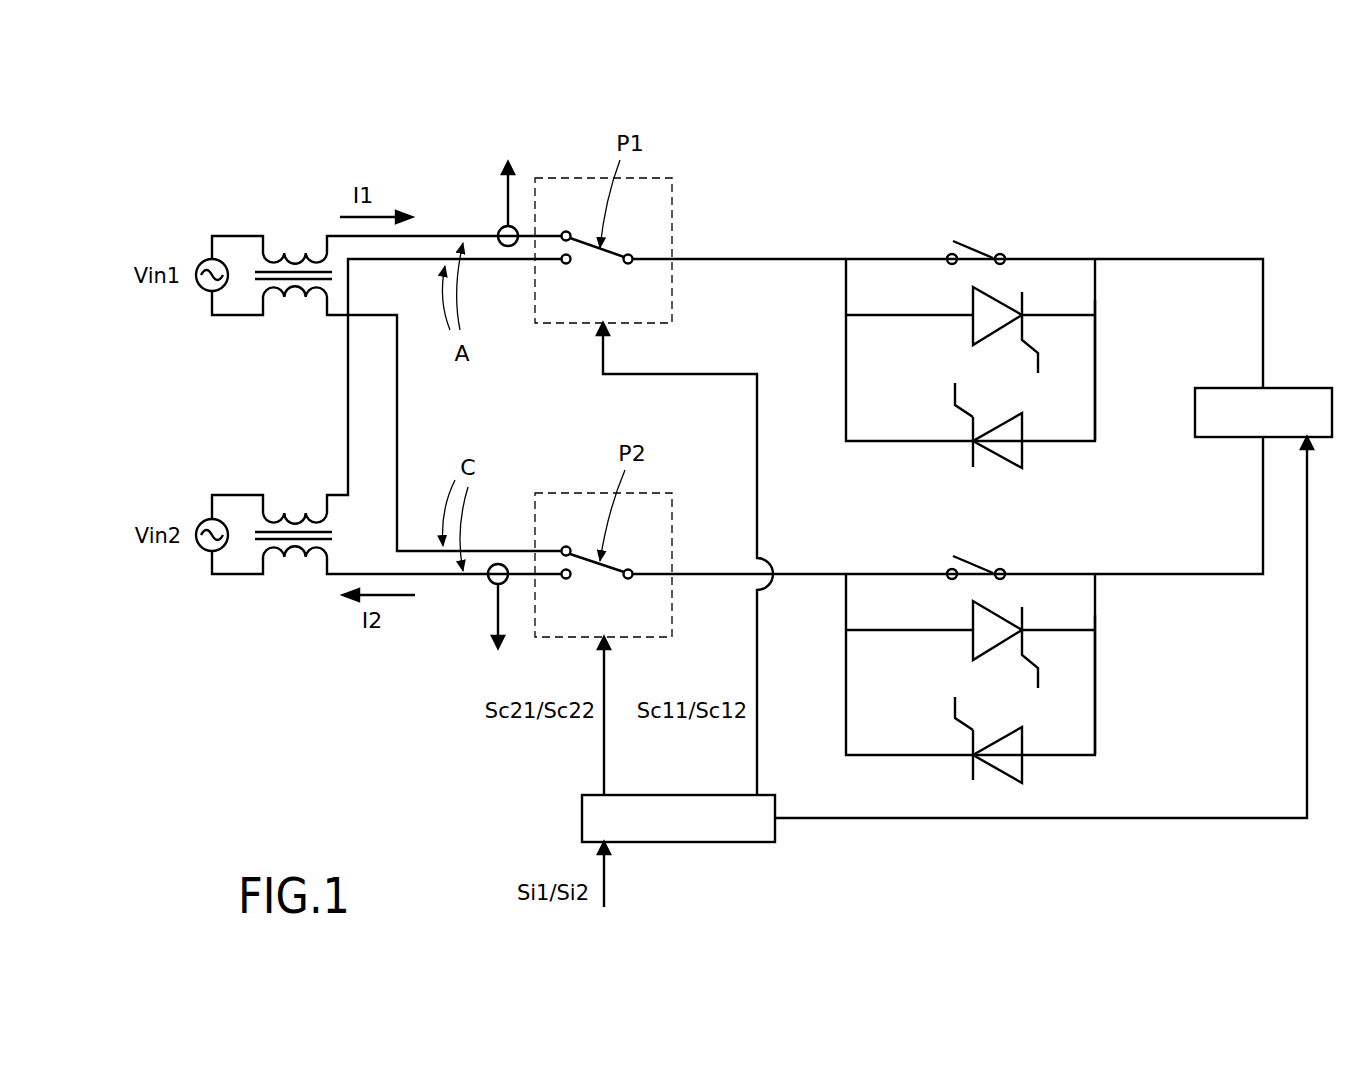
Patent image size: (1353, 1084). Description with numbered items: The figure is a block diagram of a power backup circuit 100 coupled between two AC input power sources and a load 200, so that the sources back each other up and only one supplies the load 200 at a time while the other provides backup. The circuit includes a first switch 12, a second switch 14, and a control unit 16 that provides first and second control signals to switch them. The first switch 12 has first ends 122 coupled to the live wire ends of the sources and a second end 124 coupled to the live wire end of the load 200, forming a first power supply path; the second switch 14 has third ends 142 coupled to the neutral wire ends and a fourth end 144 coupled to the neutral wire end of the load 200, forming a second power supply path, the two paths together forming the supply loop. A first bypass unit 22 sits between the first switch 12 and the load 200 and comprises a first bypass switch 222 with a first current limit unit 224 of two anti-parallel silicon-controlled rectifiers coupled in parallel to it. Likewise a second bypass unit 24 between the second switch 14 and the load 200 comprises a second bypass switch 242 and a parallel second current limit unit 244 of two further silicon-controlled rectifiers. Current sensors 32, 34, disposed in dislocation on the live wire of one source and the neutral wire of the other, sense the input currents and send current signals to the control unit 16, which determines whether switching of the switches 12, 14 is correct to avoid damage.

The power backup circuit 100 is at (857, 118).
The first switch 12 is at (672, 176).
The first ends 122 is at (563, 229).
The second end 124 is at (637, 248).
The second switch 14 is at (669, 491).
The third ends 142 is at (563, 544).
The fourth end 144 is at (637, 563).
The control unit 16 is at (592, 819).
The first bypass unit 22 is at (1144, 184).
The first bypass switch 222 is at (994, 233).
The first current limit unit 224 is at (1113, 372).
The second bypass unit 24 is at (1169, 751).
The second bypass switch 242 is at (994, 549).
The second current limit unit 244 is at (1113, 685).
The current sensor 32 is at (497, 228).
The current sensor 34 is at (487, 582).
The load 200 is at (1302, 397).